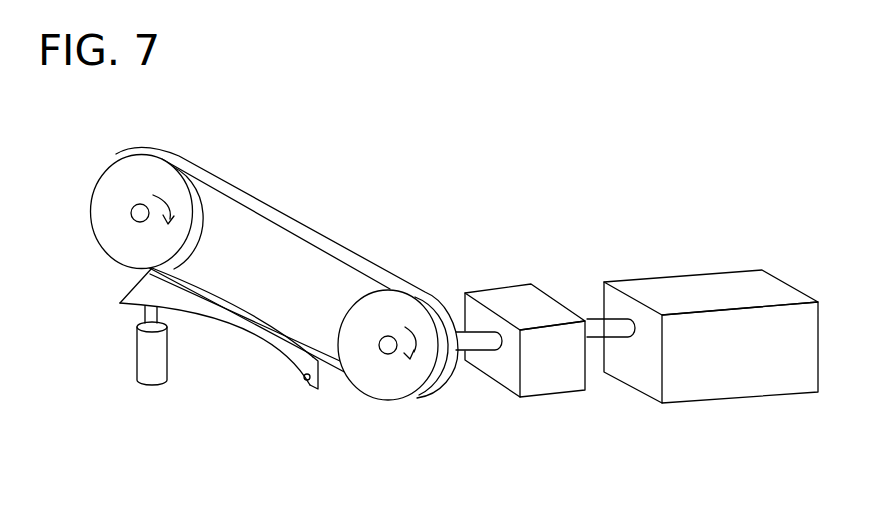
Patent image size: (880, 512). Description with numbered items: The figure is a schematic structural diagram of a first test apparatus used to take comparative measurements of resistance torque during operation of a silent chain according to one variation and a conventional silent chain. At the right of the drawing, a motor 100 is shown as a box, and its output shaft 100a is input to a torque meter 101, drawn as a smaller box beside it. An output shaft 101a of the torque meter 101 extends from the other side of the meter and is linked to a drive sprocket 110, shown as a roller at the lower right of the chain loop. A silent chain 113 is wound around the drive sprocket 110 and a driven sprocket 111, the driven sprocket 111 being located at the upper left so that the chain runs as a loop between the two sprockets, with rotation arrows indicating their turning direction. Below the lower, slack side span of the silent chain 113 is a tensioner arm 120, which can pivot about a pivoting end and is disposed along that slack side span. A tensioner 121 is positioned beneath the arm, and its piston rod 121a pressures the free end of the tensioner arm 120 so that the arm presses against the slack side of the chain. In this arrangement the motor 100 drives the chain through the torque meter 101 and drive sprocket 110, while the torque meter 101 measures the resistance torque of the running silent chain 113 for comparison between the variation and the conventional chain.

The motor 100 is at (705, 272).
The output shaft of the motor 100a is at (597, 326).
The torque meter 101 is at (515, 283).
The output shaft of the torque meter 101a is at (482, 344).
The drive sprocket 110 is at (397, 394).
The driven sprocket 111 is at (108, 239).
The silent chain 113 is at (302, 230).
The tensioner arm 120 is at (253, 338).
The tensioner 121 is at (143, 365).
The piston rod of the tensioner 121a is at (143, 318).